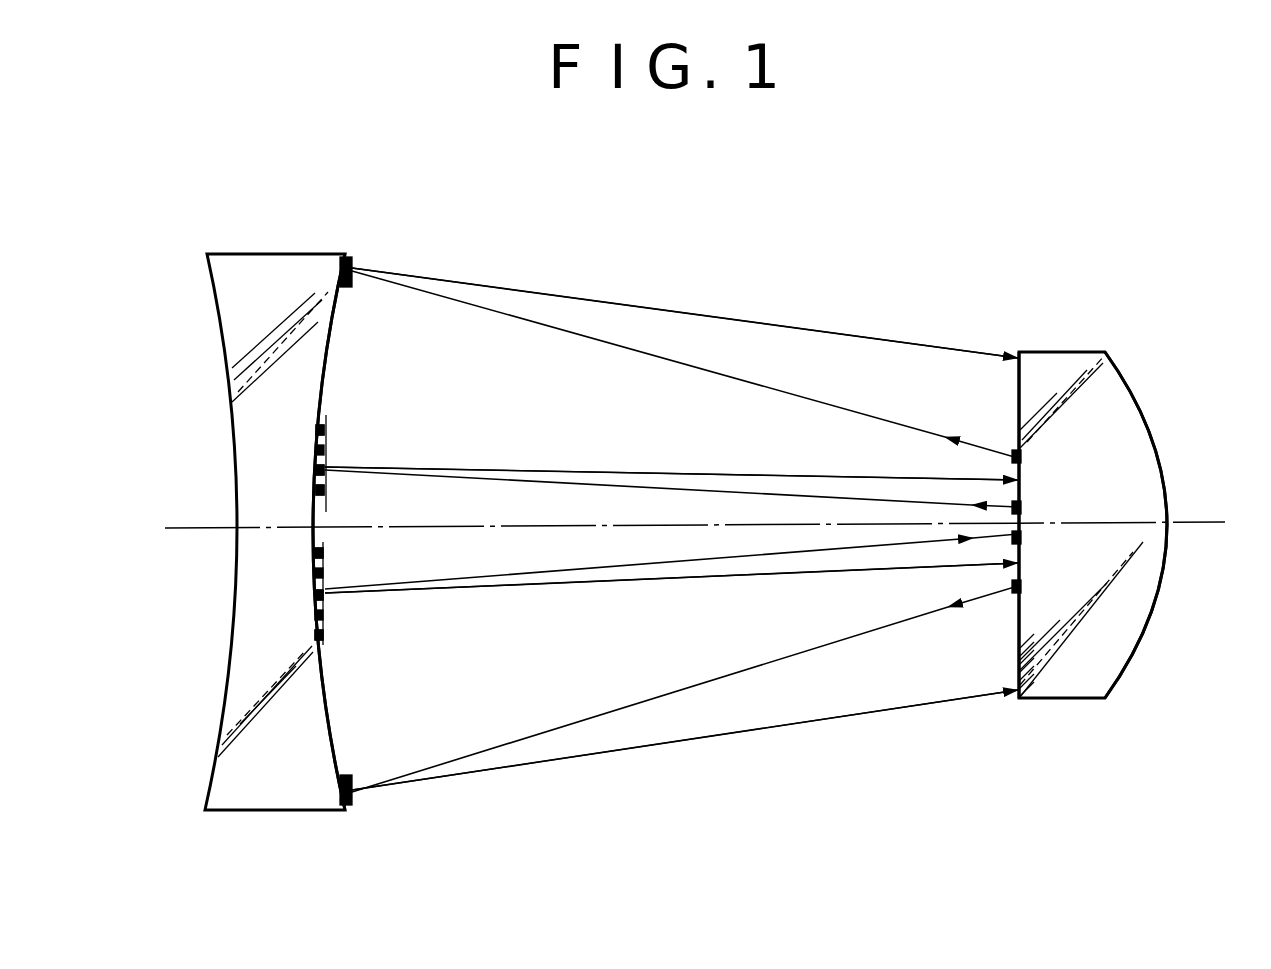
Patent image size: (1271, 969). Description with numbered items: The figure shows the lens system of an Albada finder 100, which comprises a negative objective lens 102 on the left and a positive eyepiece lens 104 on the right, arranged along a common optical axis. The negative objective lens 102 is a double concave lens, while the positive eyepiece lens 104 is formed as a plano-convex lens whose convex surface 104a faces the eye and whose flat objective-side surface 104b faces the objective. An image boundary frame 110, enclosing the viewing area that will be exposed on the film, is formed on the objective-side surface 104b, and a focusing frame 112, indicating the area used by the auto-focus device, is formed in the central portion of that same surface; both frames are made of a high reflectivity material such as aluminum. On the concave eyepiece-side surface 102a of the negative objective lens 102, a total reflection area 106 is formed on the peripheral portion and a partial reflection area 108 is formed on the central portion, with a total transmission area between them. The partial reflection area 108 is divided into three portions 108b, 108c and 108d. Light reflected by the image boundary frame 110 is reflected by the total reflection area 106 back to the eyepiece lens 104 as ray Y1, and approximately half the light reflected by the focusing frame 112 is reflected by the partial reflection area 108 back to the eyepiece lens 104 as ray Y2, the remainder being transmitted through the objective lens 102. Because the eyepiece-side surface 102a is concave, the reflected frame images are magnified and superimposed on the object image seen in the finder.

The Albada finder 100 is at (888, 322).
The negative objective lens 102 is at (290, 785).
The eyepiece-side surface 102a is at (337, 730).
The positive eyepiece lens 104 is at (1070, 680).
The convex surface of second lens 104a is at (1160, 588).
The objective-side surface 104b is at (1019, 640).
The total reflection area 106 is at (357, 264).
The partial reflection area 108 is at (490, 345).
The portion of partial reflection area 108b is at (326, 463).
The portion of partial reflection area 108c is at (326, 433).
The portion of partial reflection area 108d is at (326, 496).
The image boundary frame 110 is at (1021, 585).
The focusing frame 112 is at (1010, 510).
The ray Y1 is at (752, 325).
The ray Y2 is at (715, 477).